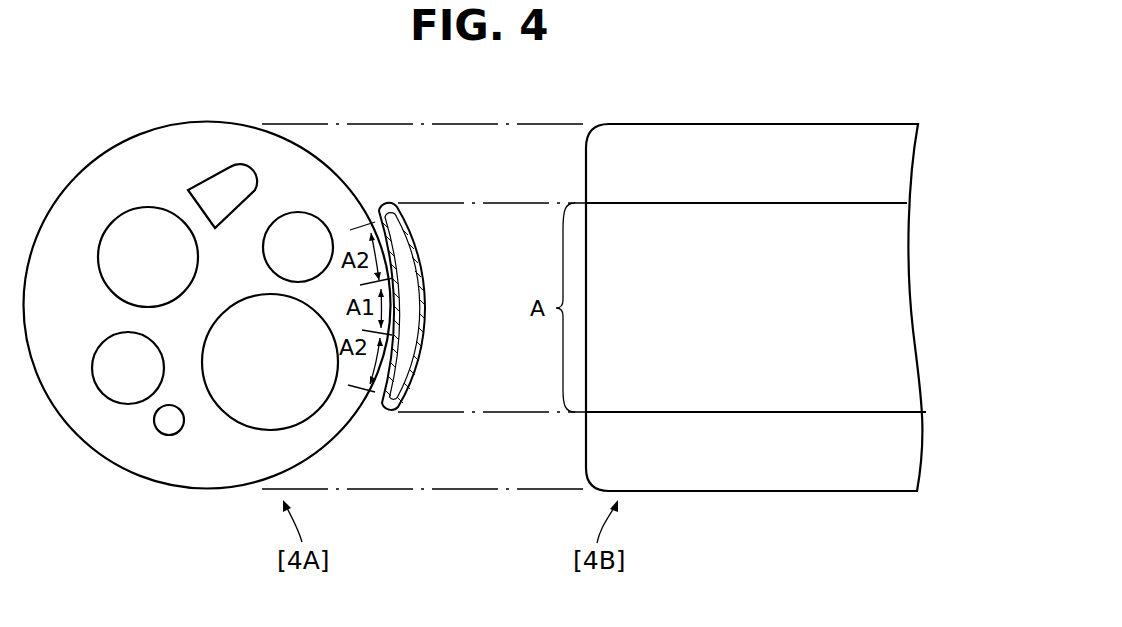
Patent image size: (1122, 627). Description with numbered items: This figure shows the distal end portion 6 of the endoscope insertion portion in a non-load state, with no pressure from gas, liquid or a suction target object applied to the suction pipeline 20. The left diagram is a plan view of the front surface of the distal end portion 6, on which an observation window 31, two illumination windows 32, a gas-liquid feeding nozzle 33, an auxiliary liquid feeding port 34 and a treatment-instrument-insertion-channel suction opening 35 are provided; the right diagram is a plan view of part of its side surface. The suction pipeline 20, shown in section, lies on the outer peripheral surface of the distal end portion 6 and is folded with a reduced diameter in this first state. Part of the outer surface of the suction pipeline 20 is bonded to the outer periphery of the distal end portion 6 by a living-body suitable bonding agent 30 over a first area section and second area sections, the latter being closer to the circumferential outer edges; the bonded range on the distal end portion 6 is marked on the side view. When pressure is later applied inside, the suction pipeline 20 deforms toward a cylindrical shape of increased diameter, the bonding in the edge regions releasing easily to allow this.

The distal end portion 6 is at (77, 89).
The suction pipeline 20 is at (381, 206).
The living-body suitable bonding agent 30 is at (369, 403).
The observation window 31 is at (121, 233).
The illumination windows 32 is at (300, 232).
The gas-liquid feeding nozzle 33 is at (217, 188).
The auxiliary liquid feeding port 34 is at (169, 427).
The treatment-instrument-insertion-channel suction opening 35 is at (265, 408).